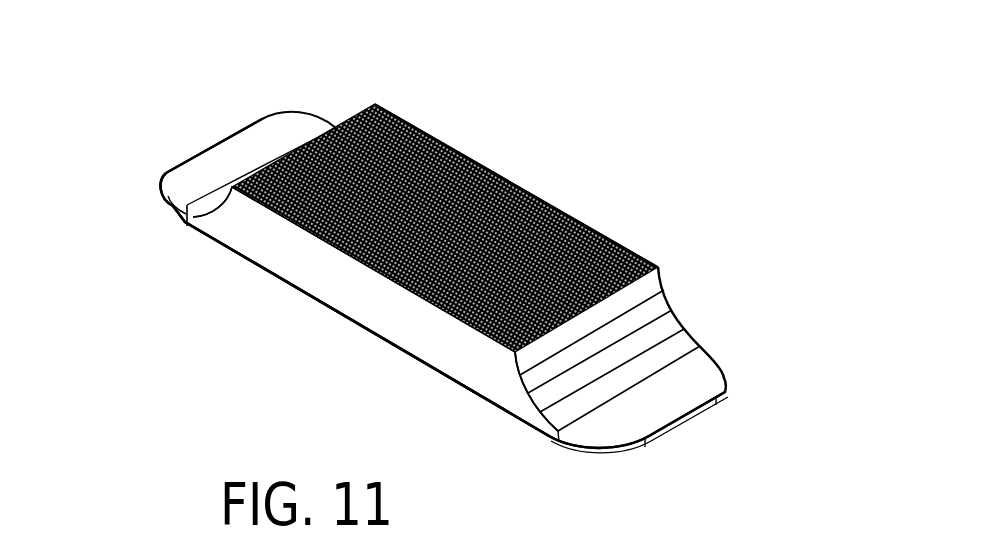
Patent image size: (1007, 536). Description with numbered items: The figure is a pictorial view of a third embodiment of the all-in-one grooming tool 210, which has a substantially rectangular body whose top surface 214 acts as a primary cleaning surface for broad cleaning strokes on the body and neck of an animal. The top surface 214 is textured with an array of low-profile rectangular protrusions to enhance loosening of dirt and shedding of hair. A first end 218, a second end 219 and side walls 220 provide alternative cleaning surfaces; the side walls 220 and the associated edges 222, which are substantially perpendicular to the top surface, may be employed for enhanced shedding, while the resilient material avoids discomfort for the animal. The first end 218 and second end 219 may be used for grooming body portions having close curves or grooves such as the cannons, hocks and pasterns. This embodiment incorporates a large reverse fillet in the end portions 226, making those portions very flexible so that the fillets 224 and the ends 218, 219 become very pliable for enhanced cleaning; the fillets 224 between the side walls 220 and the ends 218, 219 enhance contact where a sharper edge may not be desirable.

The tool 210 is at (588, 151).
The top surface 214 is at (460, 148).
The first end 218 is at (690, 421).
The second end 219 is at (193, 157).
The side walls 220 is at (592, 221).
The edges 222 is at (352, 255).
The fillets 224 is at (168, 198).
The end portions 226 is at (247, 160).